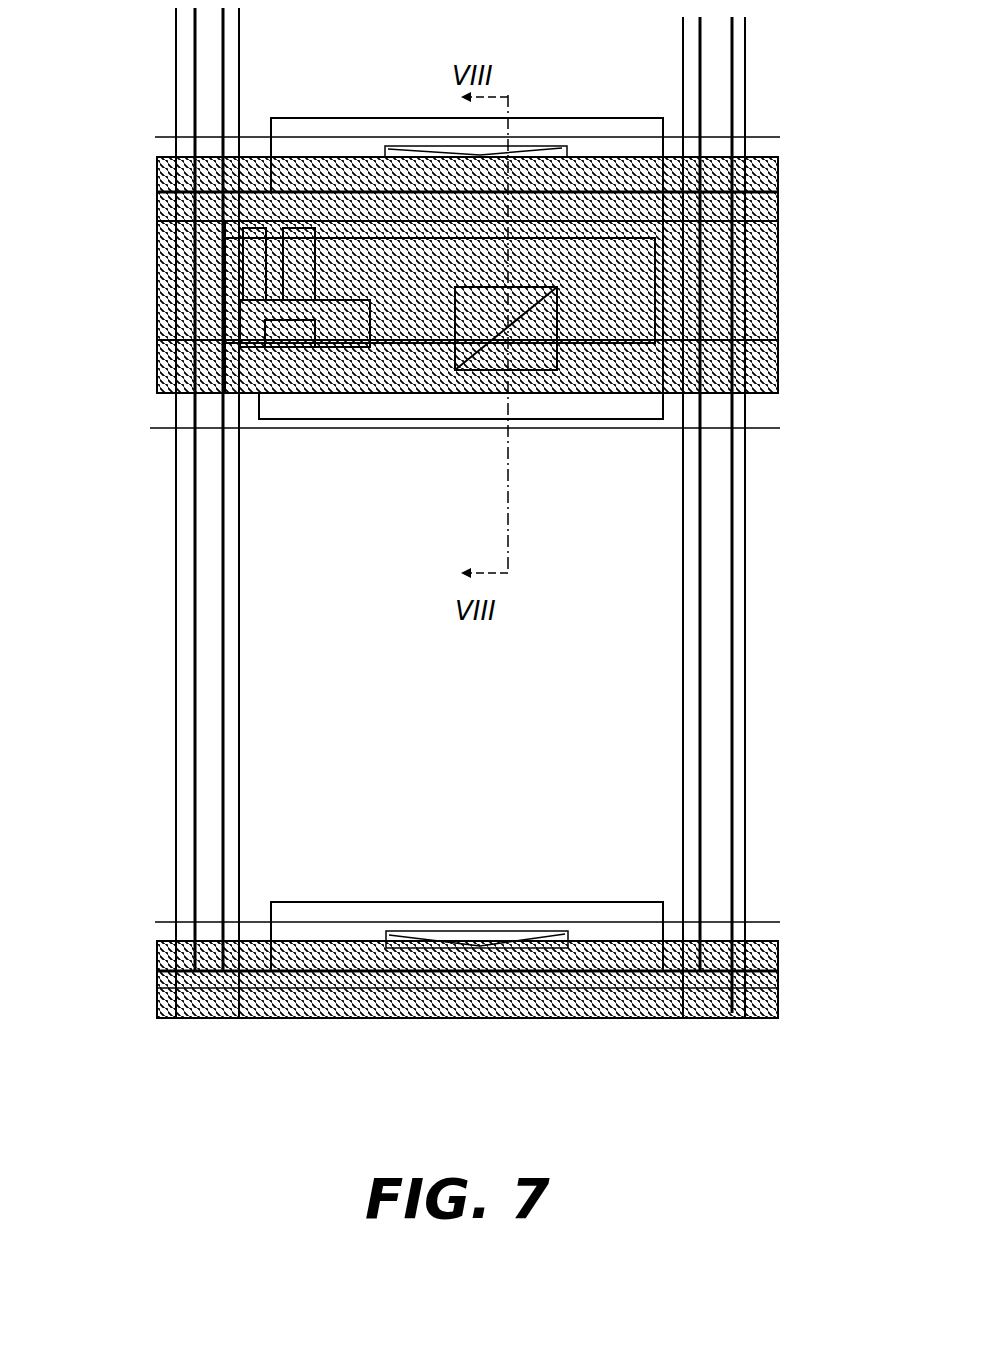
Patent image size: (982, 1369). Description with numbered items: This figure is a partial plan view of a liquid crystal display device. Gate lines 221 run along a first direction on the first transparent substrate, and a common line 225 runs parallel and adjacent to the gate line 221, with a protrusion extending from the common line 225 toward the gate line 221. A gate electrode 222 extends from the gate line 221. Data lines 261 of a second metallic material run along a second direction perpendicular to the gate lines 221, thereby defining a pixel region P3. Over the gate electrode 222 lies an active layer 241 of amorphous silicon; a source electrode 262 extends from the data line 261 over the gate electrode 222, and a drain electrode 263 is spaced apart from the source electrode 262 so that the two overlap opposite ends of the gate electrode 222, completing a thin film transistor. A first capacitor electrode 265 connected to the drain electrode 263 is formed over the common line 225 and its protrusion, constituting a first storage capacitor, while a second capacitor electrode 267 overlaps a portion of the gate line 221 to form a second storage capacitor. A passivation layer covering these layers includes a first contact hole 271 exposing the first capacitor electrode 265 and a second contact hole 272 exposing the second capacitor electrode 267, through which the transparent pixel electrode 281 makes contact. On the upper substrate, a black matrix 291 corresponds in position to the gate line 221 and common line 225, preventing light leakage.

The gate line 221 is at (642, 137).
The gate electrode 222 is at (327, 393).
The common line 225 is at (413, 428).
The active layer 241 is at (272, 393).
The data line 261 is at (176, 730).
The source electrode 262 is at (280, 270).
The drain electrode 263 is at (283, 333).
The first capacitor electrode 265 is at (452, 420).
The second capacitor electrode 267 is at (535, 118).
The first contact hole 271 is at (540, 378).
The second contact hole 272 is at (427, 146).
The pixel electrode 281 is at (590, 157).
The black matrix 291 is at (613, 393).
The pixel region P3 is at (640, 756).